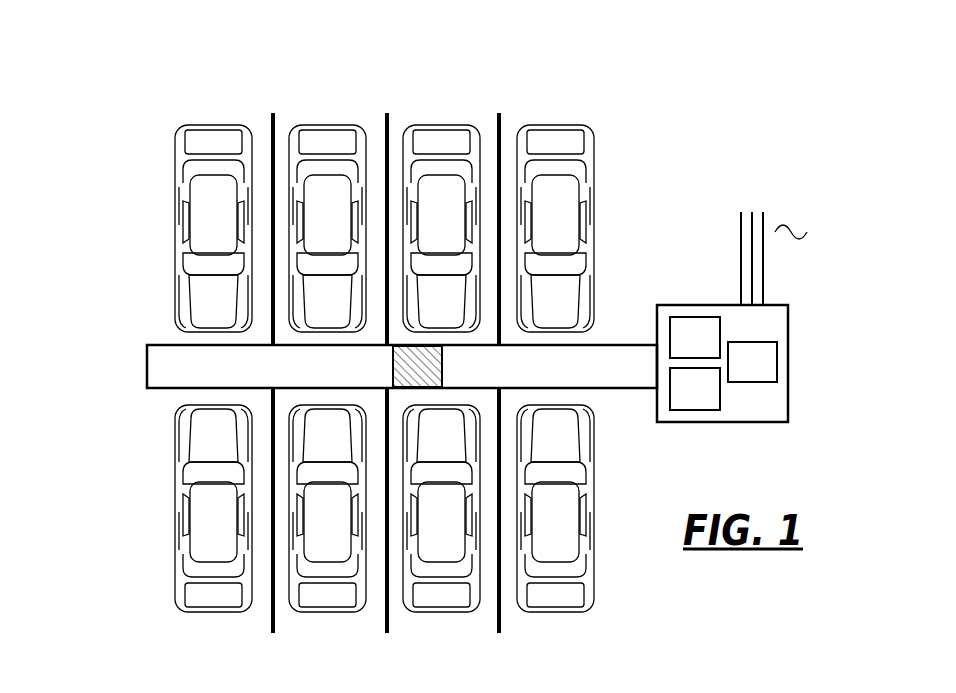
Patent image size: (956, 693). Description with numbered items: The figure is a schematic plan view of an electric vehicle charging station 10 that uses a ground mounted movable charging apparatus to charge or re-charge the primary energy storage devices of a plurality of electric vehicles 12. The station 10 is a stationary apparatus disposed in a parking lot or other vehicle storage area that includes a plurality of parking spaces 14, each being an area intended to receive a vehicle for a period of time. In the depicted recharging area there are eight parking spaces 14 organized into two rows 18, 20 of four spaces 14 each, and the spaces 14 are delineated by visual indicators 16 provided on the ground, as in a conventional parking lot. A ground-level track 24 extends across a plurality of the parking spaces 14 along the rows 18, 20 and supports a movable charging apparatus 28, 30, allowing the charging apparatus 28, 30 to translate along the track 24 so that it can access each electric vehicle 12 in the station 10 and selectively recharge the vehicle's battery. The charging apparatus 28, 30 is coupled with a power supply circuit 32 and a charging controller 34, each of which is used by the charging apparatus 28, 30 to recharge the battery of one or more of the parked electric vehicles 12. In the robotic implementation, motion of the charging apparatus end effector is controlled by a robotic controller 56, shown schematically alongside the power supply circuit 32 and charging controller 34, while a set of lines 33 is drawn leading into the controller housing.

The electric vehicle charging station 10 is at (126, 63).
The electric vehicle 12 is at (384, 368).
The parking space 14 is at (233, 117).
The visual indicator 16 is at (266, 113).
The first row 18 is at (108, 220).
The second row 20 is at (106, 492).
The ground-level track 24 is at (146, 361).
The movable charging apparatus 28 is at (392, 352).
The movable charging apparatus 30 is at (722, 363).
The power supply circuit 32 is at (695, 337).
The charging controller 34 is at (695, 389).
The robotic controller 56 is at (752, 362).
The power supply lines 33 is at (765, 218).